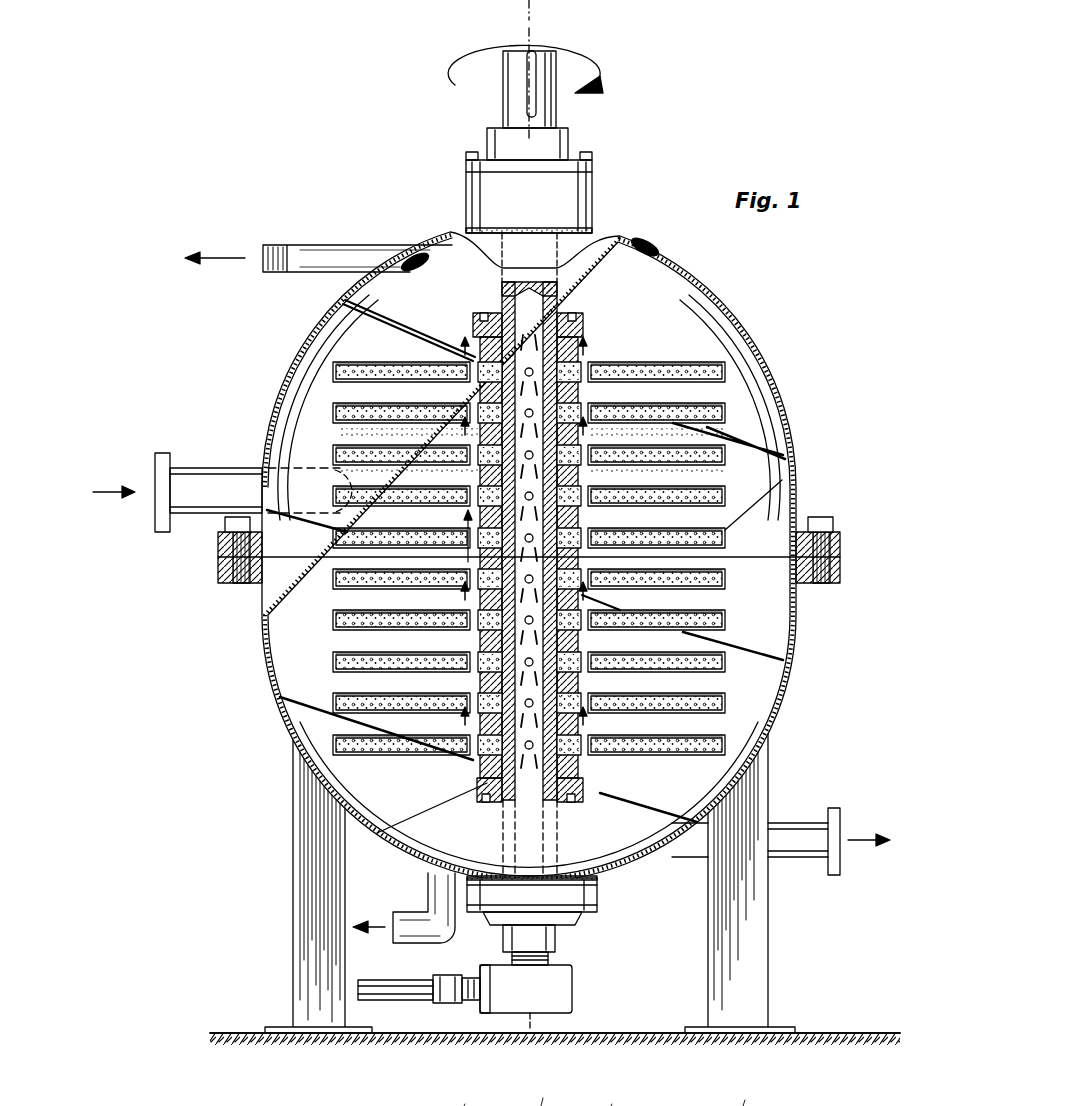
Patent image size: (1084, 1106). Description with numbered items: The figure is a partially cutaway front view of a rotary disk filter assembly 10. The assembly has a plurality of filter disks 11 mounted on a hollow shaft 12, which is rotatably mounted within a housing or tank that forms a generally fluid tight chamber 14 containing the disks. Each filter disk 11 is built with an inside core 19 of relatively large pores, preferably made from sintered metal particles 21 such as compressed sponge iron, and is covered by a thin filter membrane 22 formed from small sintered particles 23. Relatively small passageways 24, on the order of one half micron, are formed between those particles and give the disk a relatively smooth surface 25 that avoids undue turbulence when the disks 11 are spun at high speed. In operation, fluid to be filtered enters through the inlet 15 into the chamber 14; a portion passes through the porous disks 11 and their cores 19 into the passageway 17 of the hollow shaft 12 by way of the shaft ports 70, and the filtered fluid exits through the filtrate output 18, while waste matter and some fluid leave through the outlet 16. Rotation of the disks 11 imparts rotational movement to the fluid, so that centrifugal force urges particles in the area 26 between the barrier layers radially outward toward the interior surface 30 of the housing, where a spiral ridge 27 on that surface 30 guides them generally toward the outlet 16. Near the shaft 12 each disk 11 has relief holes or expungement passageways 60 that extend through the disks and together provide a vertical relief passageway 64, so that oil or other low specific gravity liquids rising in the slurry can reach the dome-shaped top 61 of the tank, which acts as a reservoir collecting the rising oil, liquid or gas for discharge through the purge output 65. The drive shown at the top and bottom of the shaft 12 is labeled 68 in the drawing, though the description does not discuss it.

The rotary disk filter assembly 10 is at (250, 763).
The filter disks 11 is at (667, 363).
The hollow shaft 12 is at (558, 298).
The chamber 14 is at (650, 276).
The inlet 15 is at (337, 475).
The outlet 16 is at (797, 860).
The passageway 17 is at (500, 298).
The filtrate output 18 is at (410, 1002).
The inside core 19 is at (705, 363).
The sintered metal particles 21 is at (648, 1092).
The filter membrane 22 is at (620, 360).
The sintered particles 23 is at (613, 1095).
The small passageways 24 is at (466, 1095).
The disk surface 25 is at (373, 360).
The area between barrier layers 26 is at (723, 432).
The spiral ridge 27 is at (367, 328).
The interior surface of the housing 30 is at (772, 380).
The expungement passageways 60 is at (465, 352).
The dome-shaped top 61 is at (433, 311).
The relief passageway 64 is at (466, 563).
The purge output 65 is at (345, 245).
The drive motor 68 is at (531, 8).
The shaft ports 70 is at (548, 360).